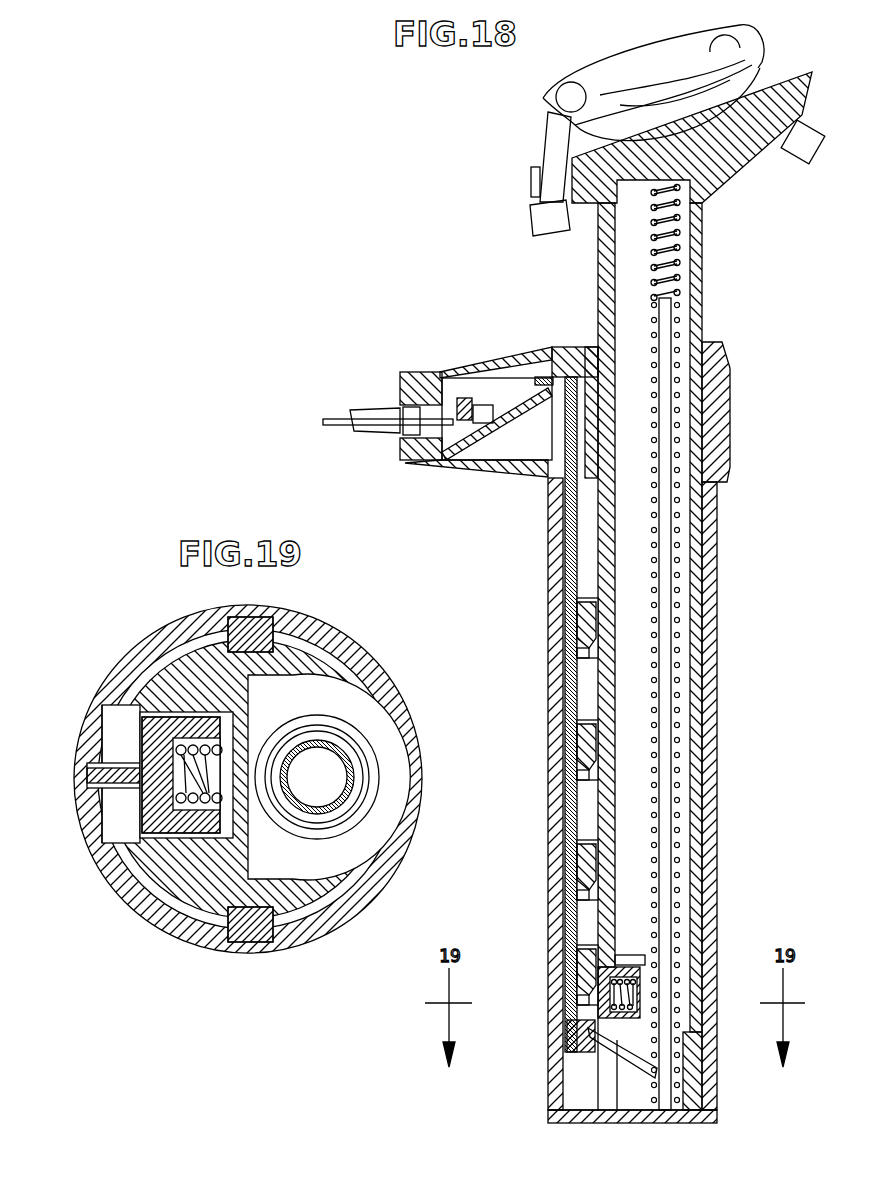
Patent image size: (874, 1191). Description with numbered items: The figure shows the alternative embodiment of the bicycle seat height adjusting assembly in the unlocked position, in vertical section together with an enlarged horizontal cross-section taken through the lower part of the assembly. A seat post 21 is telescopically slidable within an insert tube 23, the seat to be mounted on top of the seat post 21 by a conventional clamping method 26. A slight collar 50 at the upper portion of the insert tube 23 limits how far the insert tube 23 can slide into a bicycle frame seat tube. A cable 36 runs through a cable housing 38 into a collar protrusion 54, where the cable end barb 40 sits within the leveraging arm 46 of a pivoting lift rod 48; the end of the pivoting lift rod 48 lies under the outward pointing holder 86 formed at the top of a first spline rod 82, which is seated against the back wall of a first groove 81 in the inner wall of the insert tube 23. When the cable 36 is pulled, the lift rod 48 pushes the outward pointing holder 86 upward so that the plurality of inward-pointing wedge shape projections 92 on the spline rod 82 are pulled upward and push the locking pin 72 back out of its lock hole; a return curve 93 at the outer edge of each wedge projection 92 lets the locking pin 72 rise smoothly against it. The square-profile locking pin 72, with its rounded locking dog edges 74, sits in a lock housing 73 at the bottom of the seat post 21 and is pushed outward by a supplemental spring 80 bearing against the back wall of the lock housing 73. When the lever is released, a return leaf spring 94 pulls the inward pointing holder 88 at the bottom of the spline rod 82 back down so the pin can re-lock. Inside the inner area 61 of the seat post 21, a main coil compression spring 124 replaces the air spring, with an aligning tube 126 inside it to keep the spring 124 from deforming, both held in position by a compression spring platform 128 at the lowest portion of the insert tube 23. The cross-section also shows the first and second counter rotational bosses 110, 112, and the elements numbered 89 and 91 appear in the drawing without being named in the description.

In FIG. 18, the seat post 21 is at (703, 220).
In FIG. 19, the seat post 21 is at (323, 887).
In FIG. 18, the insert tube 23 is at (545, 530).
In FIG. 19, the insert tube 23 is at (382, 865).
In FIG. 18, the clamping method 26 is at (603, 98).
In FIG. 18, the cable 36 is at (335, 420).
In FIG. 18, the cable housing 38 is at (383, 410).
In FIG. 18, the cable end barb 40 is at (485, 408).
In FIG. 18, the leveraging arm 46 is at (490, 420).
In FIG. 18, the pivoting lift rod 48 is at (530, 445).
In FIG. 18, the collar 50 is at (720, 443).
In FIG. 18, the collar protrusion 54 is at (512, 357).
In FIG. 18, the inner area 61 is at (643, 310).
In FIG. 18, the locking pin 72 is at (550, 1043).
In FIG. 19, the locking pin 72 is at (183, 825).
In FIG. 18, the lock housing 73 is at (630, 953).
In FIG. 18, the locking dog edges 74 is at (600, 990).
In FIG. 19, the locking dog edges 74 is at (140, 827).
In FIG. 18, the supplemental spring 80 is at (627, 1015).
In FIG. 19, the supplemental spring 80 is at (202, 803).
In FIG. 18, the first groove 81 is at (587, 448).
In FIG. 18, the first spline rod 82 is at (553, 552).
In FIG. 19, the first spline rod 82 is at (97, 745).
In FIG. 18, the outward pointing holder 86 is at (552, 377).
In FIG. 18, the inward pointing holder 88 is at (588, 1052).
In FIG. 19, the pin 89 is at (95, 773).
In FIG. 18, the bracket 91 is at (592, 605).
In FIG. 19, the bracket 91 is at (118, 737).
In FIG. 18, the wedge shape projections 92 is at (593, 625).
In FIG. 18, the return curve 93 is at (585, 657).
In FIG. 18, the return leaf spring 94 is at (612, 1117).
In FIG. 19, the first counter rotational boss 110 is at (252, 930).
In FIG. 19, the second counter rotational boss 112 is at (245, 635).
In FIG. 18, the main coil compression spring 124 is at (678, 817).
In FIG. 19, the main coil compression spring 124 is at (295, 727).
In FIG. 18, the aligning tube 126 is at (663, 318).
In FIG. 19, the aligning tube 126 is at (340, 760).
In FIG. 18, the compression spring platform 128 is at (632, 1117).